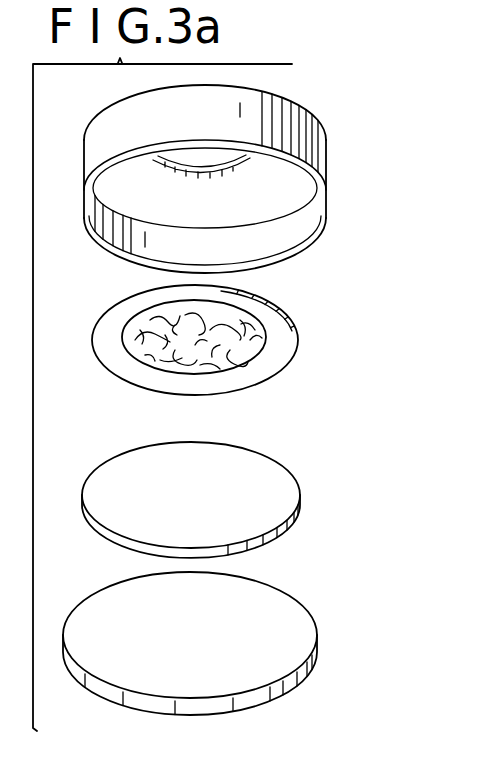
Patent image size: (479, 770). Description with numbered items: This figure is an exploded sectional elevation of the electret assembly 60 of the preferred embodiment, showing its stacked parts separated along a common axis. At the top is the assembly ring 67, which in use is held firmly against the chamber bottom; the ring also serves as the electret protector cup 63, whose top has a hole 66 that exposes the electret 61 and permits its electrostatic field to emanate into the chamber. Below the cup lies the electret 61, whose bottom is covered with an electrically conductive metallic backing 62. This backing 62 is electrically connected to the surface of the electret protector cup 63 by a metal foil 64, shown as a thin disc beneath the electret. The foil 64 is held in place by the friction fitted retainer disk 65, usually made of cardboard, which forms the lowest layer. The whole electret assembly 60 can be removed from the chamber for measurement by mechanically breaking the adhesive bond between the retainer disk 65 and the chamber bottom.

The electret assembly 60 is at (340, 408).
The electret 61 is at (293, 316).
The electrically conductive metallic backing 62 is at (240, 358).
The electret protector cup 63 is at (323, 138).
The metal foil 64 is at (298, 488).
The retainer disk 65 is at (305, 623).
The hole 66 is at (212, 162).
The assembly ring 67 is at (327, 219).